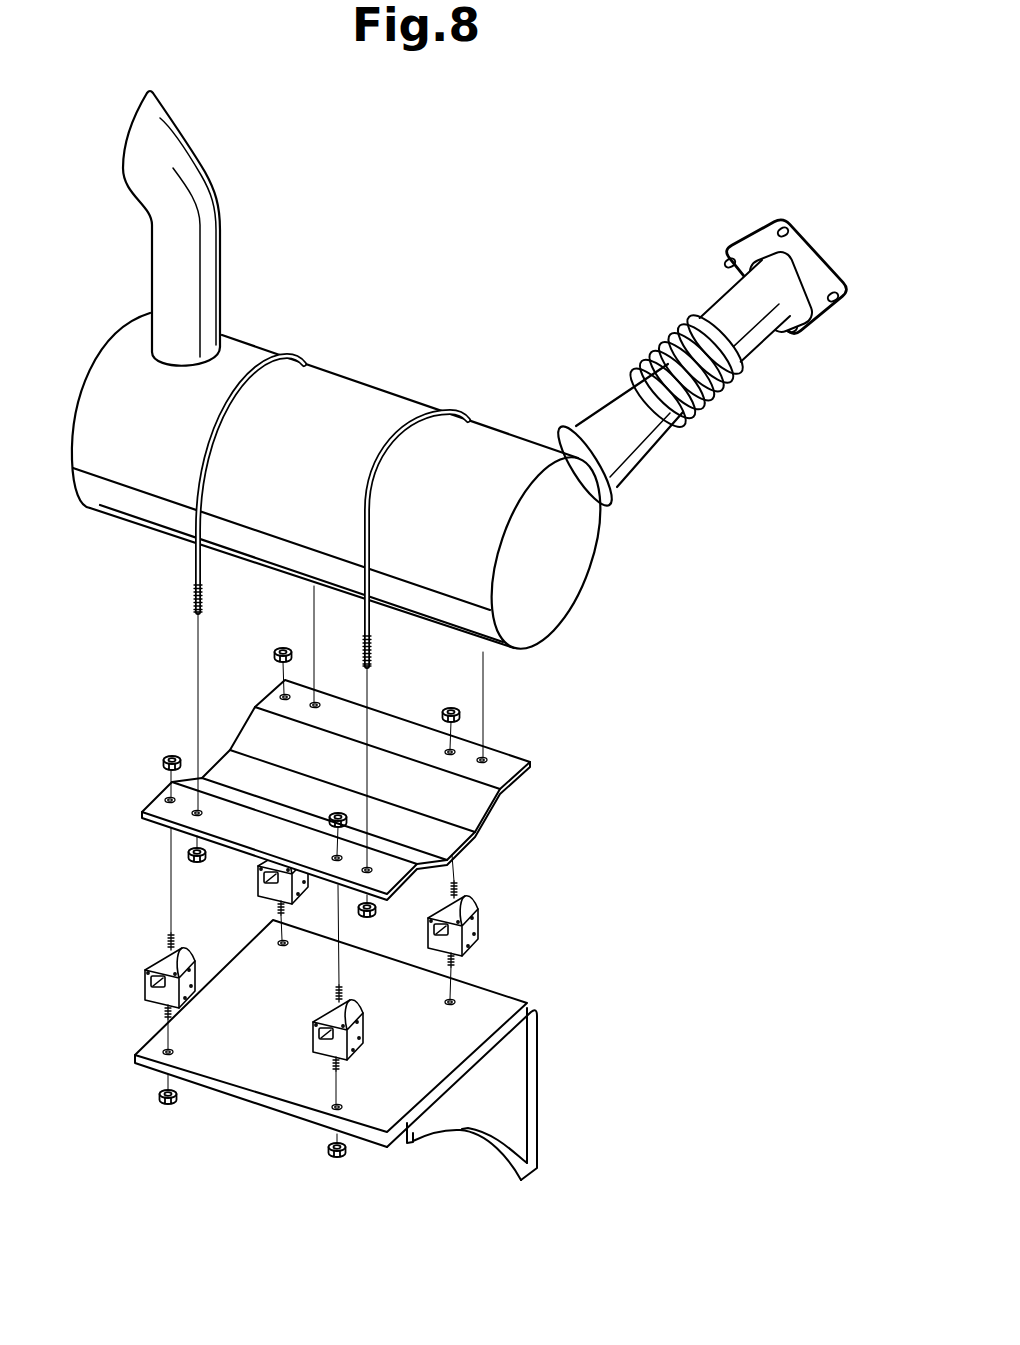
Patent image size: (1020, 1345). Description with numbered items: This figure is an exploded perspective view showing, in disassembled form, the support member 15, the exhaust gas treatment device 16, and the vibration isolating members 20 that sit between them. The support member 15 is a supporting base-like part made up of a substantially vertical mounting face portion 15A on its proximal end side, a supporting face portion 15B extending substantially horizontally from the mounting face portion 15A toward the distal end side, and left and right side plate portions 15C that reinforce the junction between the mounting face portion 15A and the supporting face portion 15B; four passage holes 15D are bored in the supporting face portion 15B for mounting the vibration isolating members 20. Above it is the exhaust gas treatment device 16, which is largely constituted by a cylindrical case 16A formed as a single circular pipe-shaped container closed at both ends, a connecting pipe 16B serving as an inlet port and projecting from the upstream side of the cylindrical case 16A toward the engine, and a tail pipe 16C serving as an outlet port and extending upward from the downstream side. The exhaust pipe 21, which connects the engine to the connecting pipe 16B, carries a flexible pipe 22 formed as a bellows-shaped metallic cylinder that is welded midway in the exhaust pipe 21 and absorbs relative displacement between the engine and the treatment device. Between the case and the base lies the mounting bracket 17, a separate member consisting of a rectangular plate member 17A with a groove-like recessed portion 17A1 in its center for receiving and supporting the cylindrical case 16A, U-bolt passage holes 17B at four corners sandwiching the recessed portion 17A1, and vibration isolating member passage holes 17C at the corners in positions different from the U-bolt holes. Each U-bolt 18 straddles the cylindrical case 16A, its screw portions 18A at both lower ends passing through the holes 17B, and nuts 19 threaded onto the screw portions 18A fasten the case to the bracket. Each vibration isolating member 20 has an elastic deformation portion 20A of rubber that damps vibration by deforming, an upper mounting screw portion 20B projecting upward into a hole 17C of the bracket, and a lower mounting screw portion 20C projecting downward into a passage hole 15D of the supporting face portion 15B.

The support member 15 is at (393, 1078).
The mounting face portion 15A is at (538, 1060).
The supporting face portion 15B is at (283, 1060).
The side plate portion 15C is at (487, 1117).
The passage hole 15D is at (457, 1000).
The exhaust gas treatment device 16 is at (368, 377).
The cylindrical case 16A is at (387, 414).
The connecting pipe 16B is at (622, 475).
The tail pipe 16C is at (170, 243).
The mounting bracket 17 is at (340, 774).
The plate member 17A is at (397, 733).
The recessed portion 17A1 is at (437, 837).
The U-bolt passage hole 17B is at (198, 812).
The vibration isolating member passage hole 17C is at (452, 750).
The U-bolt 18 is at (302, 591).
The screw portion 18A is at (193, 600).
The nut 19 is at (280, 650).
The vibration isolating member 20 is at (307, 934).
The elastic deformation portion 20A is at (147, 983).
The upper mounting screw portion 20B is at (167, 932).
The lower mounting screw portion 20C is at (163, 1010).
The exhaust pipe 21 is at (738, 307).
The flexible pipe 22 is at (672, 353).